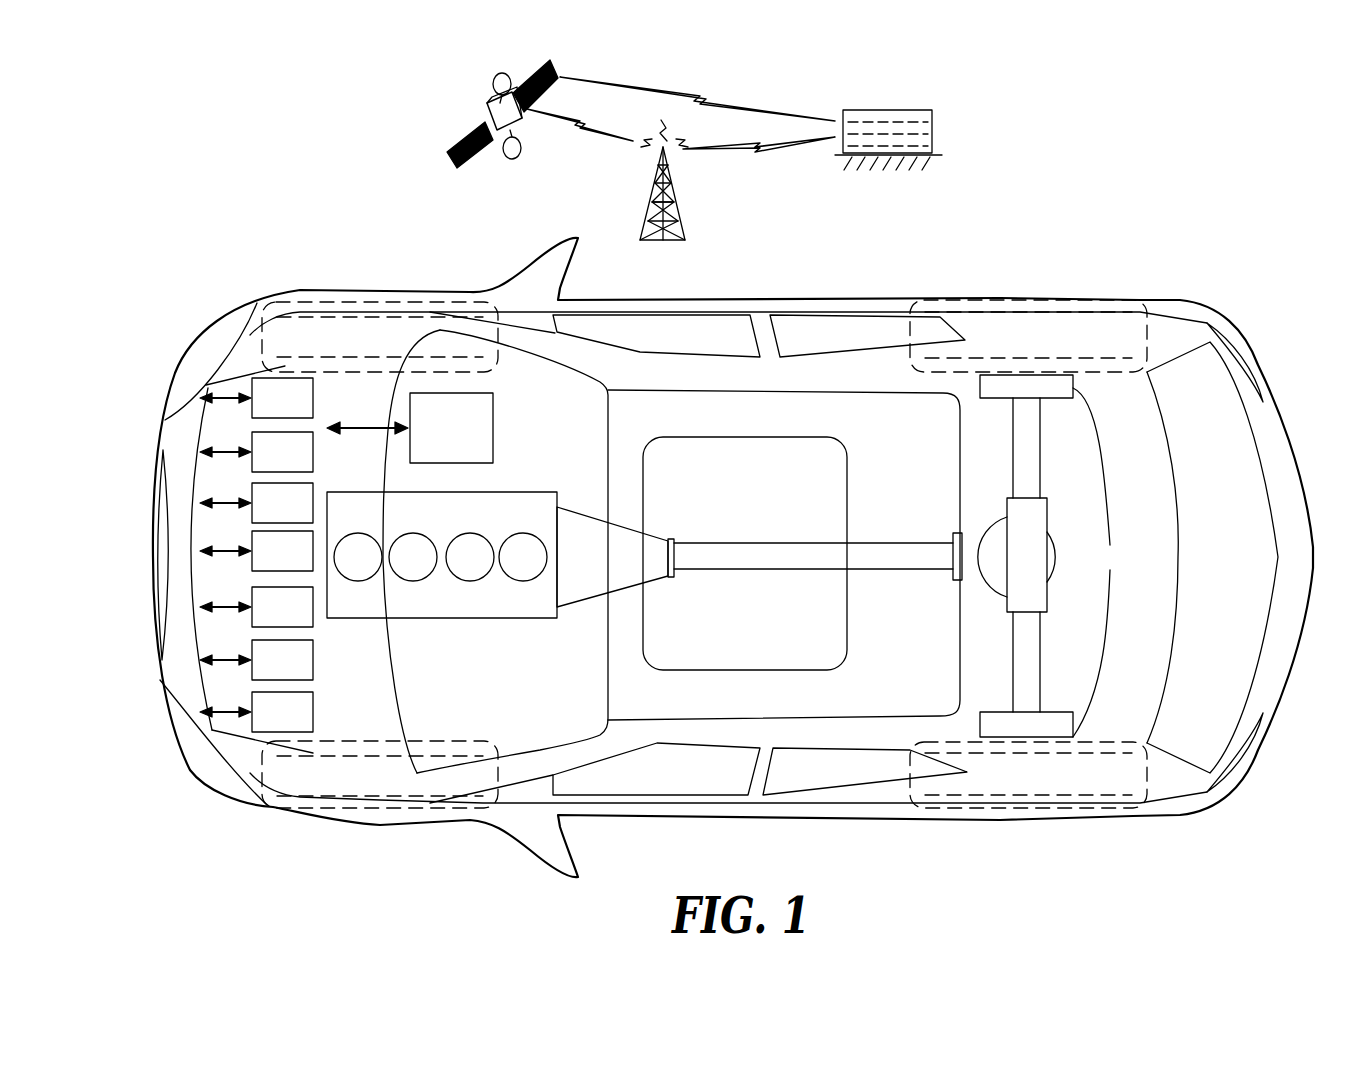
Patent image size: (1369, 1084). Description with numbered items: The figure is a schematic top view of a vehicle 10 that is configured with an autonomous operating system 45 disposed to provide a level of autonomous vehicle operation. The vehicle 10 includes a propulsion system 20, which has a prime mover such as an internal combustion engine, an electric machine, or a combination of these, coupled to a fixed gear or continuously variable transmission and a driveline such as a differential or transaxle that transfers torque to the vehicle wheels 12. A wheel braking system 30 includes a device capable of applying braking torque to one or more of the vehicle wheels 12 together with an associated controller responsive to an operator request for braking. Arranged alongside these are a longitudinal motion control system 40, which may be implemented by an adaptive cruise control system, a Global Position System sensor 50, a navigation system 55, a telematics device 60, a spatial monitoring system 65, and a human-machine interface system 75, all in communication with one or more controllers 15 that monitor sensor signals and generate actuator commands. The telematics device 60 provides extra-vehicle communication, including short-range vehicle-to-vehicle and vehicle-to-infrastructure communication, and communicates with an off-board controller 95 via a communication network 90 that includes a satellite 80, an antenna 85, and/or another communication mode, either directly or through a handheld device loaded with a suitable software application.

The vehicle 10 is at (180, 296).
The vehicle wheel 12 is at (1028, 333).
The controller 15 is at (466, 442).
The propulsion system 20 is at (557, 558).
The wheel braking system 30 is at (1110, 545).
The longitudinal motion control system 40 is at (298, 411).
The autonomous operating system 45 is at (298, 465).
The Global Position System (GPS) sensor 50 is at (298, 516).
The navigation system 55 is at (298, 564).
The telematics device 60 is at (298, 620).
The spatial monitoring system 65 is at (298, 673).
The human-machine interface (HMI) system 75 is at (298, 725).
The satellite 80 is at (517, 113).
The antenna 85 is at (677, 187).
The communication network 90 is at (690, 112).
The off-board controller 95 is at (948, 120).